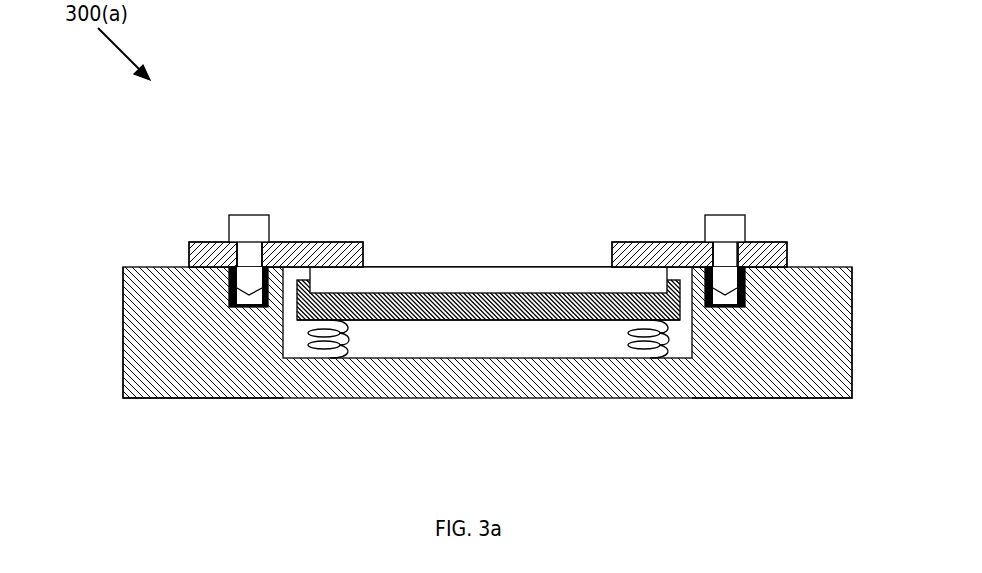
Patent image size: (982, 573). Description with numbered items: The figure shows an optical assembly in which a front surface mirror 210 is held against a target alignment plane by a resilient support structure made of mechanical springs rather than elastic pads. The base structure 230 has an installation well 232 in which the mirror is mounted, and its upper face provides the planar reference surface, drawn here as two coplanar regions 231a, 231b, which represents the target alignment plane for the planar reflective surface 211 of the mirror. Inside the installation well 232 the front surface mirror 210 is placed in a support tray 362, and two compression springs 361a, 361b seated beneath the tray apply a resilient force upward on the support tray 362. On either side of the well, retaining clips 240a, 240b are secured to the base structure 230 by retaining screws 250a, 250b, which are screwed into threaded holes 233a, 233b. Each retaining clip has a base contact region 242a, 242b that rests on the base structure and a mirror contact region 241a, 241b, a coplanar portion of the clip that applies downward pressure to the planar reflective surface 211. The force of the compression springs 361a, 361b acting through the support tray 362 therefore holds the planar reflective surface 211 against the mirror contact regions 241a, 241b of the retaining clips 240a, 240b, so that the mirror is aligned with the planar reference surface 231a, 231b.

The front surface mirror 210 is at (548, 280).
The planar reflective surface 211 is at (430, 267).
The base structure 230 is at (545, 382).
The planar reference surface region 231a is at (137, 268).
The planar reference surface region 231b is at (812, 267).
The installation well 232 is at (470, 358).
The threaded hole 233a is at (245, 307).
The threaded hole 233b is at (735, 307).
The retaining clip 240a is at (288, 247).
The retaining clip 240b is at (657, 247).
The mirror contact region 241a is at (340, 258).
The mirror contact region 241b is at (640, 263).
The base contact region 242a is at (205, 243).
The base contact region 242b is at (770, 263).
The retaining screw 250a is at (250, 215).
The retaining screw 250b is at (725, 215).
The compression spring 361a is at (322, 347).
The compression spring 361b is at (638, 347).
The support tray 362 is at (403, 320).